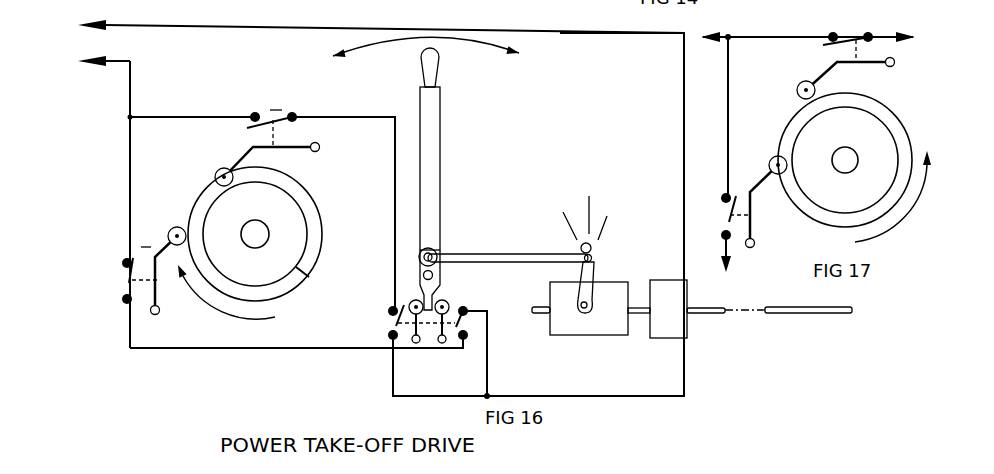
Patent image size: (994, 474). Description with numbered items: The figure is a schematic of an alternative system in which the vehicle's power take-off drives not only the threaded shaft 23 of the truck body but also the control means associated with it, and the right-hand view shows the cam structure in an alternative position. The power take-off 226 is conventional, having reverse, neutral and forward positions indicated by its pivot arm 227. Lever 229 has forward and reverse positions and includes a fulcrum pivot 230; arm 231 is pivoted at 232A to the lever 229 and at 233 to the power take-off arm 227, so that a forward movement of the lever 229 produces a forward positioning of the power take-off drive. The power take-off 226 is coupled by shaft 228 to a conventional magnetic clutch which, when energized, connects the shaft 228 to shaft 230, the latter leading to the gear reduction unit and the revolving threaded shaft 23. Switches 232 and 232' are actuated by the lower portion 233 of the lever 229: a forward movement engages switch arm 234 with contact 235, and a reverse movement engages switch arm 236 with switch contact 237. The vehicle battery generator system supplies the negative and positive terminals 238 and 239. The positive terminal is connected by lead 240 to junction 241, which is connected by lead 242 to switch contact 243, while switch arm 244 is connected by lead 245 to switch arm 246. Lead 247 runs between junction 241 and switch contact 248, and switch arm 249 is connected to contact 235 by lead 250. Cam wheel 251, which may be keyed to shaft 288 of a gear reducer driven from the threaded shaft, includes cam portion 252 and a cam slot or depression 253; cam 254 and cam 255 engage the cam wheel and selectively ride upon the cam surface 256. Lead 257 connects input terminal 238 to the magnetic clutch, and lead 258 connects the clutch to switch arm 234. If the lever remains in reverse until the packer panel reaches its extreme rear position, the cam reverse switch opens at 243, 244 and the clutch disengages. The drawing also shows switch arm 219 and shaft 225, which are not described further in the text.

In FIG. 17, the threaded shaft 23 is at (815, 315).
In FIG. 17, the switch arm 219 is at (888, 44).
In FIG. 16, the input shaft 225 is at (544, 318).
In FIG. 16, the power take-off 226 is at (562, 334).
In FIG. 16, the pivot arm 227 is at (592, 280).
In FIG. 16, the shaft 228 is at (642, 318).
In FIG. 16, the lever 229 is at (436, 160).
In FIG. 16, the fulcrum pivot 230 is at (437, 277).
In FIG. 16, the arm 231 is at (497, 254).
In FIG. 16, the switch 232 is at (416, 312).
In FIG. 16, the switch 232' is at (367, 332).
In FIG. 16, the pivot 232A is at (434, 250).
In FIG. 16, the pivot 233 is at (592, 250).
In FIG. 16, the switch arm 234 is at (392, 331).
In FIG. 16, the contact 235 is at (391, 311).
In FIG. 16, the switch arm 236 is at (468, 306).
In FIG. 16, the switch contact 237 is at (487, 317).
In FIG. 16, the negative terminal 238 is at (124, 26).
In FIG. 16, the positive terminal 239 is at (104, 67).
In FIG. 16, the lead 240 is at (131, 80).
In FIG. 16, the junction 241 is at (128, 118).
In FIG. 16, the lead 242 is at (131, 165).
In FIG. 17, the lead 242 is at (729, 130).
In FIG. 16, the switch contact 243 is at (121, 263).
In FIG. 17, the switch contact 243 is at (728, 193).
In FIG. 16, the switch arm 244 is at (121, 288).
In FIG. 16, the lead 245 is at (127, 342).
In FIG. 16, the switch arm 246 is at (466, 342).
In FIG. 16, the lead 247 is at (143, 117).
In FIG. 16, the switch contact 248 is at (253, 113).
In FIG. 17, the switch contact 248 is at (830, 34).
In FIG. 16, the switch arm 249 is at (300, 117).
In FIG. 16, the lead 250 is at (370, 117).
In FIG. 16, the cam wheel 251 is at (305, 277).
In FIG. 17, the cam wheel 251 is at (857, 100).
In FIG. 16, the cam portion 252 is at (322, 230).
In FIG. 17, the cam portion 252 is at (823, 106).
In FIG. 16, the cam slot 253 is at (218, 172).
In FIG. 16, the cam 254 is at (248, 148).
In FIG. 16, the cam 255 is at (175, 228).
In FIG. 17, the cam 255 is at (776, 178).
In FIG. 16, the cam surface 256 is at (289, 178).
In FIG. 16, the lead 257 is at (590, 30).
In FIG. 16, the lead 258 is at (670, 397).
In FIG. 16, the shaft 288 is at (262, 228).